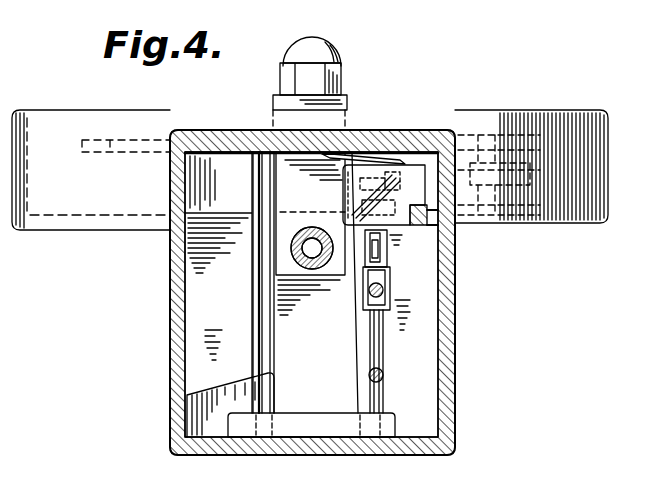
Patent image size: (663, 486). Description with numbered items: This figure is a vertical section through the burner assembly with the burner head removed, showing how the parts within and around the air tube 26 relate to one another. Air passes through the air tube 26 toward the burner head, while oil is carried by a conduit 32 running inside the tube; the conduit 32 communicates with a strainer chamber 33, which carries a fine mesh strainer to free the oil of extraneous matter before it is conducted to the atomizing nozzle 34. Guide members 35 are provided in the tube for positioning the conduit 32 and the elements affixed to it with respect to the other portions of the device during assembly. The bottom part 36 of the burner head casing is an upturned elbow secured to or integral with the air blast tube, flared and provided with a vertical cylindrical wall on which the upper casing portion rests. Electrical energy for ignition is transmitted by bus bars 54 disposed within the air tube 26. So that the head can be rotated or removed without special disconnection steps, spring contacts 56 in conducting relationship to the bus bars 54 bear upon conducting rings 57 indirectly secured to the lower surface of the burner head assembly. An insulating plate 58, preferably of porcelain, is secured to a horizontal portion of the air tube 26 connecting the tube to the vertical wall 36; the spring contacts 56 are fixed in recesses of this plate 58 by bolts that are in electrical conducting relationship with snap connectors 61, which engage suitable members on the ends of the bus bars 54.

The air tube 26 is at (430, 336).
The conduit 32 is at (318, 270).
The strainer chamber 33 is at (347, 98).
The atomizing nozzle 34 is at (315, 40).
The guide members 35 is at (185, 410).
The bottom part of burner head casing 36 is at (608, 165).
The bus bars 54 is at (386, 288).
The spring contacts 56 is at (355, 160).
The conducting rings 57 is at (245, 158).
The insulating plate 58 is at (428, 240).
The snap connectors 61 is at (388, 262).